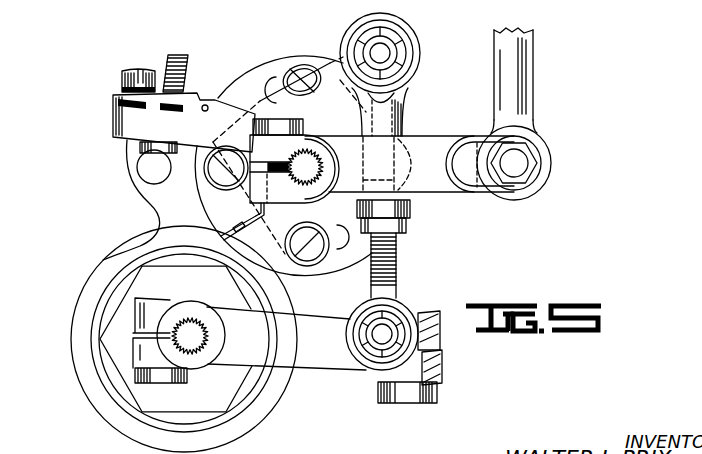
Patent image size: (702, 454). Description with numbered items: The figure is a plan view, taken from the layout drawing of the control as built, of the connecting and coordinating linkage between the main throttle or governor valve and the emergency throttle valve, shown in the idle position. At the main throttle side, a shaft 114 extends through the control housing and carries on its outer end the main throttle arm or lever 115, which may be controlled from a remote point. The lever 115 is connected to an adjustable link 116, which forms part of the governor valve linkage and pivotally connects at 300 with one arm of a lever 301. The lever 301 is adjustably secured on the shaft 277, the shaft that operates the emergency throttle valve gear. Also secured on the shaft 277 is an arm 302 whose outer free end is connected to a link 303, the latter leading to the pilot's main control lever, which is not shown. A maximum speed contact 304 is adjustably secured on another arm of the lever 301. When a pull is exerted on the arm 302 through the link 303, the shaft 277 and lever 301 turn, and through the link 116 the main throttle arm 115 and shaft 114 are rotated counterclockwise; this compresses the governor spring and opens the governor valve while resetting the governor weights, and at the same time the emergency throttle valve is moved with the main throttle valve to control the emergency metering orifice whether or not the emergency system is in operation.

The shaft 114 is at (189, 328).
The lever 115 is at (328, 360).
The adjustable link 116 is at (397, 249).
The shaft 277 is at (309, 158).
The pivotal connection 300 is at (385, 52).
The lever 301 is at (223, 107).
The arm 302 is at (427, 150).
The link 303 is at (518, 92).
The maximum speed contact 304 is at (140, 147).